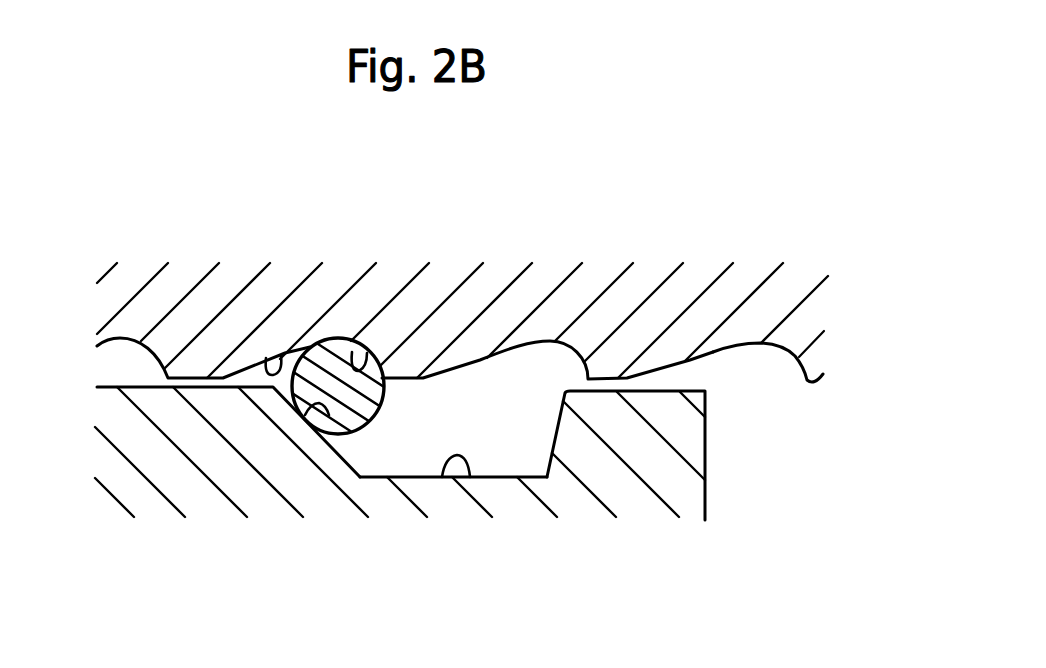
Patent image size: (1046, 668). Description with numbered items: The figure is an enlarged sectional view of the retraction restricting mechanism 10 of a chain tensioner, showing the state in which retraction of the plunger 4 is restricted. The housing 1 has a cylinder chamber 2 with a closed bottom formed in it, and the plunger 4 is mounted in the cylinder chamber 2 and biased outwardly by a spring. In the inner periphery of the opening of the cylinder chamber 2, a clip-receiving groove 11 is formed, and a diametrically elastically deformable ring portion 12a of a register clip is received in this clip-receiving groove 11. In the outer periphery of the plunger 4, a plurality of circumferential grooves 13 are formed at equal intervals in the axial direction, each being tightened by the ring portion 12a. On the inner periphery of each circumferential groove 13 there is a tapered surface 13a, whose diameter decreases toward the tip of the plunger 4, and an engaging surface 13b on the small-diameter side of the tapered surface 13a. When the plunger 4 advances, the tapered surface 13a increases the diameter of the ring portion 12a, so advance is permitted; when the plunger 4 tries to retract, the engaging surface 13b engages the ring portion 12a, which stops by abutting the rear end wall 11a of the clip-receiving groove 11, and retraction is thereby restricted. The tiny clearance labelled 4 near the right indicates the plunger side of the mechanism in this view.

The housing 1 is at (688, 491).
The cylinder chamber 2 is at (123, 360).
The plunger 4 is at (805, 332).
The retraction restricting mechanism 10 is at (752, 370).
The clip-receiving groove 11 is at (470, 478).
The rear end wall 11a is at (326, 414).
The ring portion 12a is at (348, 410).
The circumferential groove 13 is at (513, 478).
The tapered surface 13a is at (266, 360).
The engaging surface 13b is at (364, 343).